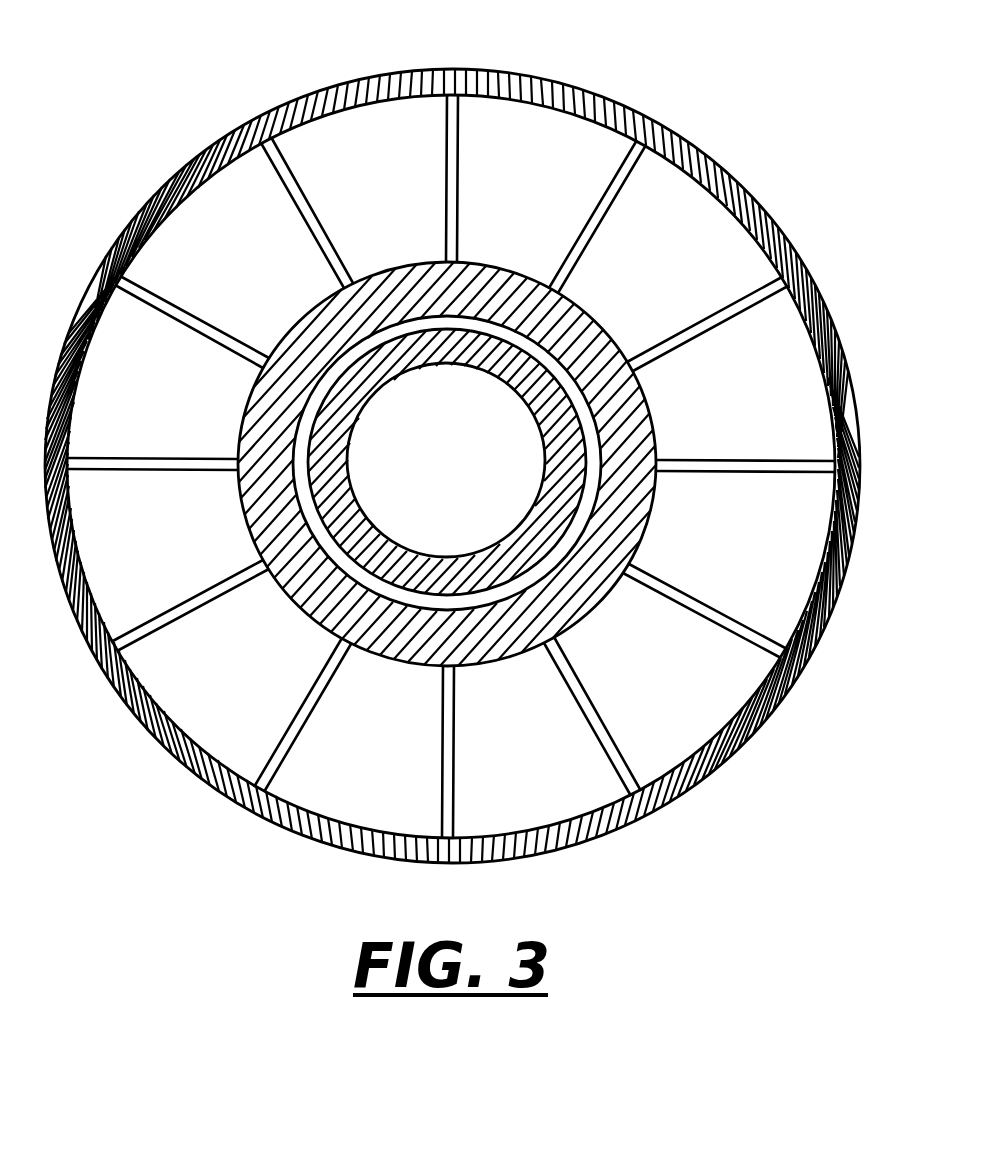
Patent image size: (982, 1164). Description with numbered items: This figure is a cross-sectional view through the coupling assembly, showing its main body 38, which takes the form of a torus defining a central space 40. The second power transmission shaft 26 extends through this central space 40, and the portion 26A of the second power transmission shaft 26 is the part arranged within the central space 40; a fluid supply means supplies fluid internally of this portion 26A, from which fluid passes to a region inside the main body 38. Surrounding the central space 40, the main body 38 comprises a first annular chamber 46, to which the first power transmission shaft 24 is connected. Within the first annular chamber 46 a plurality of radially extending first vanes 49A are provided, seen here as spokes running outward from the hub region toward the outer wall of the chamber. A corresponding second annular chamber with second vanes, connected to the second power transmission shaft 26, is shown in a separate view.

The first power transmission shaft 24 is at (623, 327).
The second power transmission shaft 26 is at (482, 329).
The portion of the second power transmission shaft 26A is at (557, 532).
The main body 38 is at (168, 782).
The central space 40 is at (446, 460).
The first annular chamber 46 is at (693, 795).
The first vanes 49A is at (290, 745).